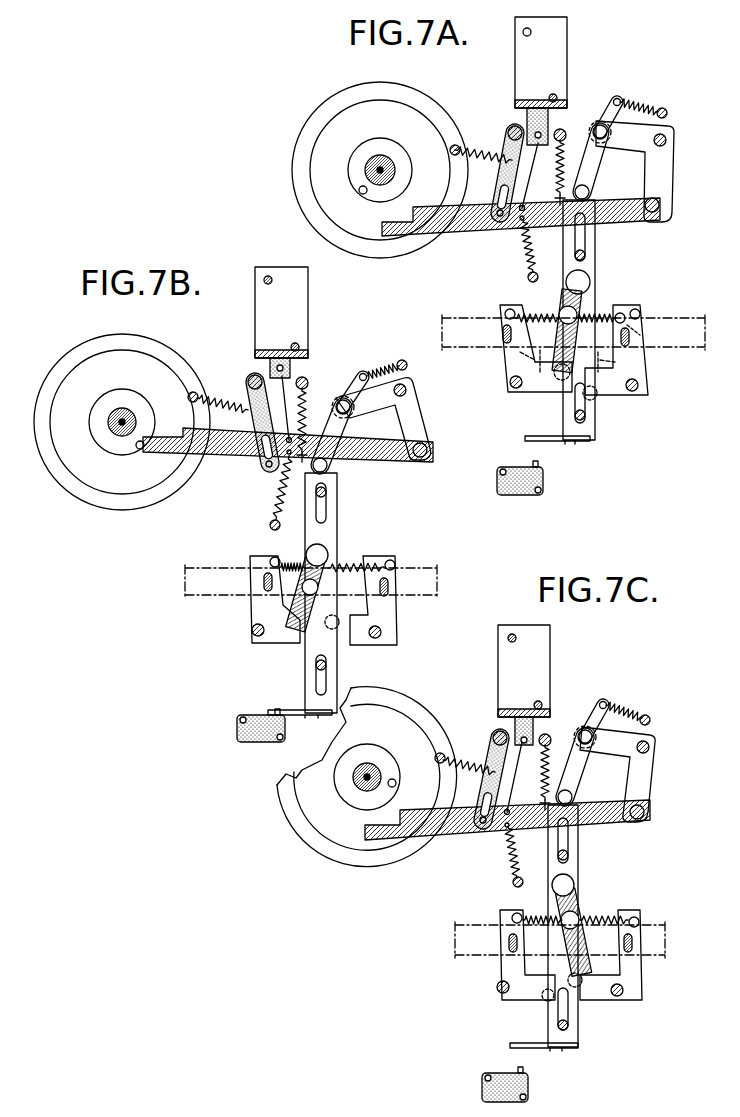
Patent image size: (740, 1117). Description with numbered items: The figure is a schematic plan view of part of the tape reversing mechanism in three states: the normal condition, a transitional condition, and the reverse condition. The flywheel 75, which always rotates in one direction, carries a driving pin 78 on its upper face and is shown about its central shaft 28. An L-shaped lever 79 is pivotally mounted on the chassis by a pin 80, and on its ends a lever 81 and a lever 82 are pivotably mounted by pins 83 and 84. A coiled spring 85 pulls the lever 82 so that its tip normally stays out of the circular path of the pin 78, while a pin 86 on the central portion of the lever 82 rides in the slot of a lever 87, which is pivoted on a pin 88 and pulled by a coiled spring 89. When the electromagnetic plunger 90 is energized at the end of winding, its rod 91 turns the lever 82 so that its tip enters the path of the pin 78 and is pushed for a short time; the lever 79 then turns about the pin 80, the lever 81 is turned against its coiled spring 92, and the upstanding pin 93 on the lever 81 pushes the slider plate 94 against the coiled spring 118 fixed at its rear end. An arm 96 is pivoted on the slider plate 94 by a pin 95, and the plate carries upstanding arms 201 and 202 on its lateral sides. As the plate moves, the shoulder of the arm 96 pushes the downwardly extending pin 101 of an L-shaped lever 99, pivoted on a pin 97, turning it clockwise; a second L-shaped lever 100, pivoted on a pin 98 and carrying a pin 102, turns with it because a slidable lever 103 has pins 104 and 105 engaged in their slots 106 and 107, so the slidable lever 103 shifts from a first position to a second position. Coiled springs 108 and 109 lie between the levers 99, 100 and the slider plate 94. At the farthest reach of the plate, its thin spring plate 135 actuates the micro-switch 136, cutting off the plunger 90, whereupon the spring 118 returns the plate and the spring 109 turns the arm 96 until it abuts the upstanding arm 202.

In FIG. 7A, the shaft 28 is at (388, 163).
In FIG. 7B, the shaft 28 is at (107, 424).
In FIG. 7C, the shaft 28 is at (375, 765).
In FIG. 7A, the flywheel 75 is at (302, 148).
In FIG. 7B, the flywheel 75 is at (78, 350).
In FIG. 7C, the flywheel 75 is at (300, 835).
In FIG. 7A, the driving pin 78 is at (359, 191).
In FIG. 7B, the driving pin 78 is at (136, 450).
In FIG. 7C, the driving pin 78 is at (397, 785).
In FIG. 7A, the L-shaped lever 79 is at (668, 180).
In FIG. 7B, the L-shaped lever 79 is at (413, 413).
In FIG. 7C, the L-shaped lever 79 is at (642, 780).
In FIG. 7A, the pin 80 is at (667, 141).
In FIG. 7B, the pin 80 is at (400, 390).
In FIG. 7C, the pin 80 is at (643, 747).
In FIG. 7A, the lever 81 is at (598, 160).
In FIG. 7B, the lever 81 is at (342, 426).
In FIG. 7C, the lever 81 is at (582, 772).
In FIG. 7A, the lever 82 is at (478, 229).
In FIG. 7B, the lever 82 is at (222, 460).
In FIG. 7C, the lever 82 is at (444, 832).
In FIG. 7A, the pin 83 is at (612, 108).
In FIG. 7B, the pin 83 is at (353, 392).
In FIG. 7C, the pin 83 is at (594, 721).
In FIG. 7A, the pin 84 is at (660, 211).
In FIG. 7B, the pin 84 is at (420, 450).
In FIG. 7C, the pin 84 is at (637, 812).
In FIG. 7A, the coiled spring 85 is at (523, 258).
In FIG. 7B, the coiled spring 85 is at (281, 490).
In FIG. 7C, the coiled spring 85 is at (513, 855).
In FIG. 7A, the pin 86 is at (500, 222).
In FIG. 7B, the pin 86 is at (268, 470).
In FIG. 7C, the pin 86 is at (485, 830).
In FIG. 7A, the lever 87 is at (506, 185).
In FIG. 7B, the lever 87 is at (254, 406).
In FIG. 7C, the lever 87 is at (496, 760).
In FIG. 7A, the pin 88 is at (510, 129).
In FIG. 7B, the pin 88 is at (255, 382).
In FIG. 7C, the pin 88 is at (500, 738).
In FIG. 7A, the coiled spring 89 is at (502, 157).
In FIG. 7B, the coiled spring 89 is at (222, 404).
In FIG. 7C, the coiled spring 89 is at (469, 766).
In FIG. 7A, the electromagnetic plunger 90 is at (567, 34).
In FIG. 7B, the electromagnetic plunger 90 is at (258, 305).
In FIG. 7C, the electromagnetic plunger 90 is at (550, 652).
In FIG. 7A, the rod 91 is at (528, 175).
In FIG. 7B, the rod 91 is at (287, 409).
In FIG. 7C, the rod 91 is at (512, 787).
In FIG. 7A, the coiled spring 92 is at (638, 104).
In FIG. 7B, the coiled spring 92 is at (386, 370).
In FIG. 7C, the coiled spring 92 is at (627, 713).
In FIG. 7A, the pin 93 is at (590, 189).
In FIG. 7B, the pin 93 is at (330, 470).
In FIG. 7C, the pin 93 is at (577, 795).
In FIG. 7A, the slider plate 94 is at (595, 238).
In FIG. 7B, the slider plate 94 is at (337, 516).
In FIG. 7C, the slider plate 94 is at (578, 848).
In FIG. 7A, the pin 95 is at (590, 279).
In FIG. 7A, the arm 96 is at (578, 311).
In FIG. 7B, the arm 96 is at (329, 562).
In FIG. 7C, the arm 96 is at (578, 915).
In FIG. 7A, the pin 97 is at (512, 390).
In FIG. 7A, the pin 98 is at (641, 396).
In FIG. 7A, the L-shaped lever 99 is at (502, 380).
In FIG. 7B, the L-shaped lever 99 is at (252, 610).
In FIG. 7C, the L-shaped lever 99 is at (500, 978).
In FIG. 7A, the L-shaped lever 100 is at (648, 381).
In FIG. 7B, the L-shaped lever 100 is at (386, 620).
In FIG. 7C, the L-shaped lever 100 is at (643, 975).
In FIG. 7A, the pin 101 is at (558, 385).
In FIG. 7A, the pin 102 is at (598, 402).
In FIG. 7A, the slidable lever 103 is at (441, 332).
In FIG. 7B, the slidable lever 103 is at (184, 580).
In FIG. 7C, the slidable lever 103 is at (454, 944).
In FIG. 7A, the pin 104 is at (504, 316).
In FIG. 7B, the pin 104 is at (270, 563).
In FIG. 7C, the pin 104 is at (511, 920).
In FIG. 7A, the pin 105 is at (628, 336).
In FIG. 7B, the pin 105 is at (396, 570).
In FIG. 7C, the pin 105 is at (640, 933).
In FIG. 7A, the slot 106 is at (514, 315).
In FIG. 7B, the slot 106 is at (292, 567).
In FIG. 7C, the slot 106 is at (542, 920).
In FIG. 7A, the slot 107 is at (640, 333).
In FIG. 7A, the coiled spring 108 is at (560, 316).
In FIG. 7B, the coiled spring 108 is at (356, 567).
In FIG. 7C, the coiled spring 108 is at (604, 920).
In FIG. 7A, the coiled spring 109 is at (623, 313).
In FIG. 7A, the coiled spring 118 is at (566, 136).
In FIG. 7B, the coiled spring 118 is at (302, 419).
In FIG. 7C, the coiled spring 118 is at (545, 772).
In FIG. 7A, the thin spring plate 135 is at (525, 438).
In FIG. 7B, the thin spring plate 135 is at (280, 710).
In FIG. 7C, the thin spring plate 135 is at (516, 1045).
In FIG. 7A, the micro-switch 136 is at (543, 486).
In FIG. 7B, the micro-switch 136 is at (237, 729).
In FIG. 7C, the micro-switch 136 is at (482, 1088).
In FIG. 7A, the upstanding arm 201 is at (520, 356).
In FIG. 7A, the upstanding arm 202 is at (618, 362).